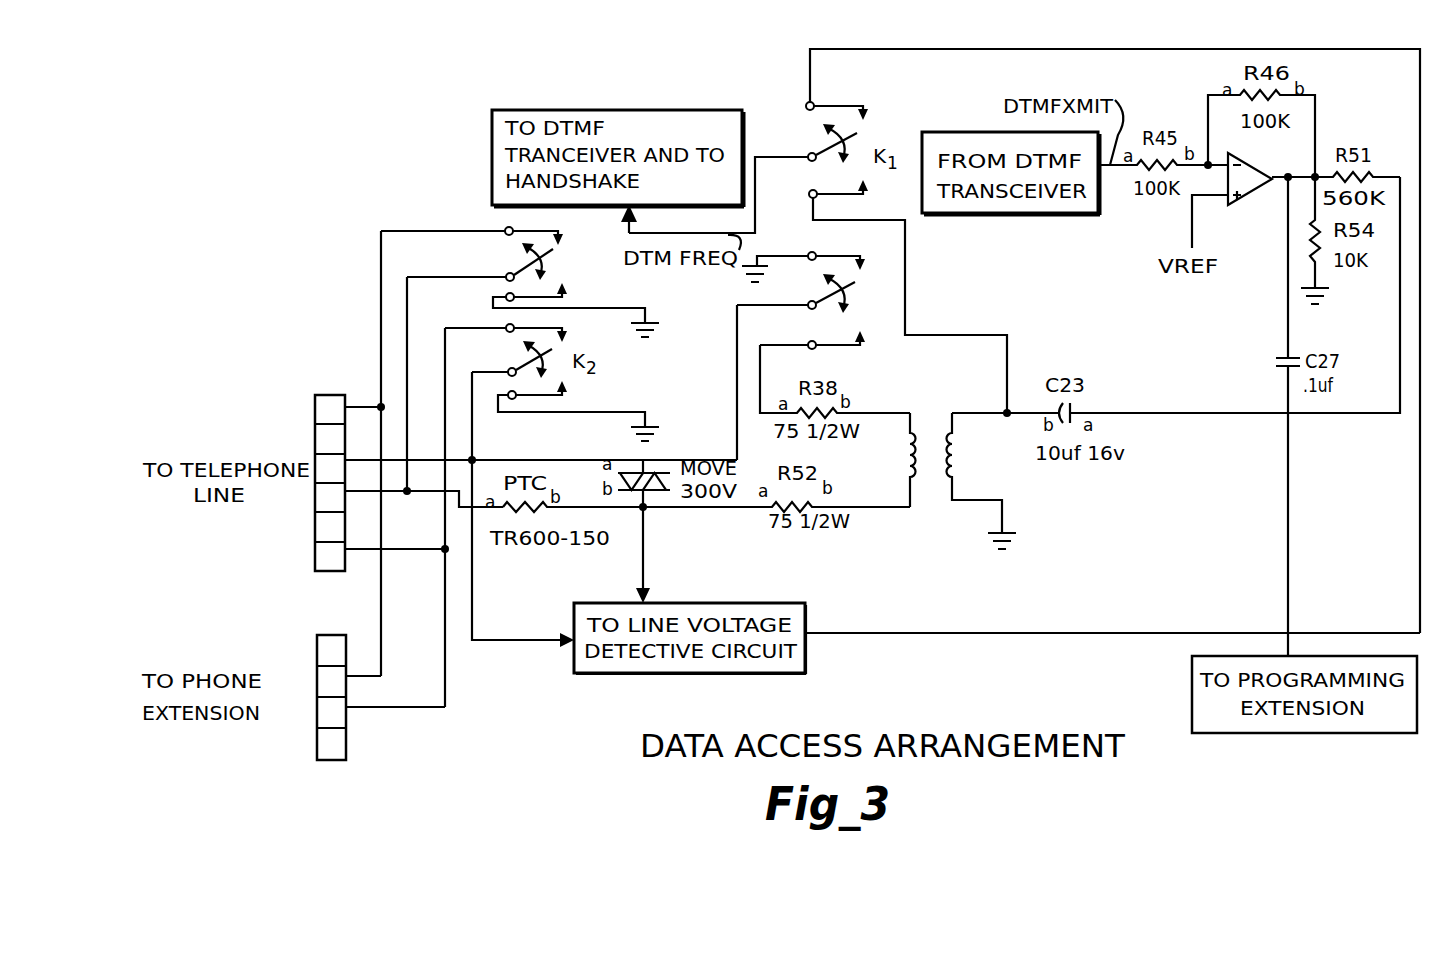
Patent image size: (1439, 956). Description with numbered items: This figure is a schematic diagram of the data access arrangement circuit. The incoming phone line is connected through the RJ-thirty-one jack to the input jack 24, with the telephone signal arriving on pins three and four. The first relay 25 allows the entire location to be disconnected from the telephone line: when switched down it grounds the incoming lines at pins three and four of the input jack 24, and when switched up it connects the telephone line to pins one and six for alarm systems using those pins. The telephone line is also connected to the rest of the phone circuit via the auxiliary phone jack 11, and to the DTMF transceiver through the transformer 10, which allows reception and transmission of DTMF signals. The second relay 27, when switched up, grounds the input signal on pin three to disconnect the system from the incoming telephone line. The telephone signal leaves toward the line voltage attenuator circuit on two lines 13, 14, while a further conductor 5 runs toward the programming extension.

The input jack J2 24 is at (315, 406).
The auxiliary phone jack J3 11 is at (346, 738).
The relay K2 25 is at (541, 233).
The relay K1 27 is at (842, 268).
The transformer 10 is at (935, 452).
The line 14 is at (645, 557).
The line 13 is at (528, 641).
The line to programming extension 5 is at (947, 633).